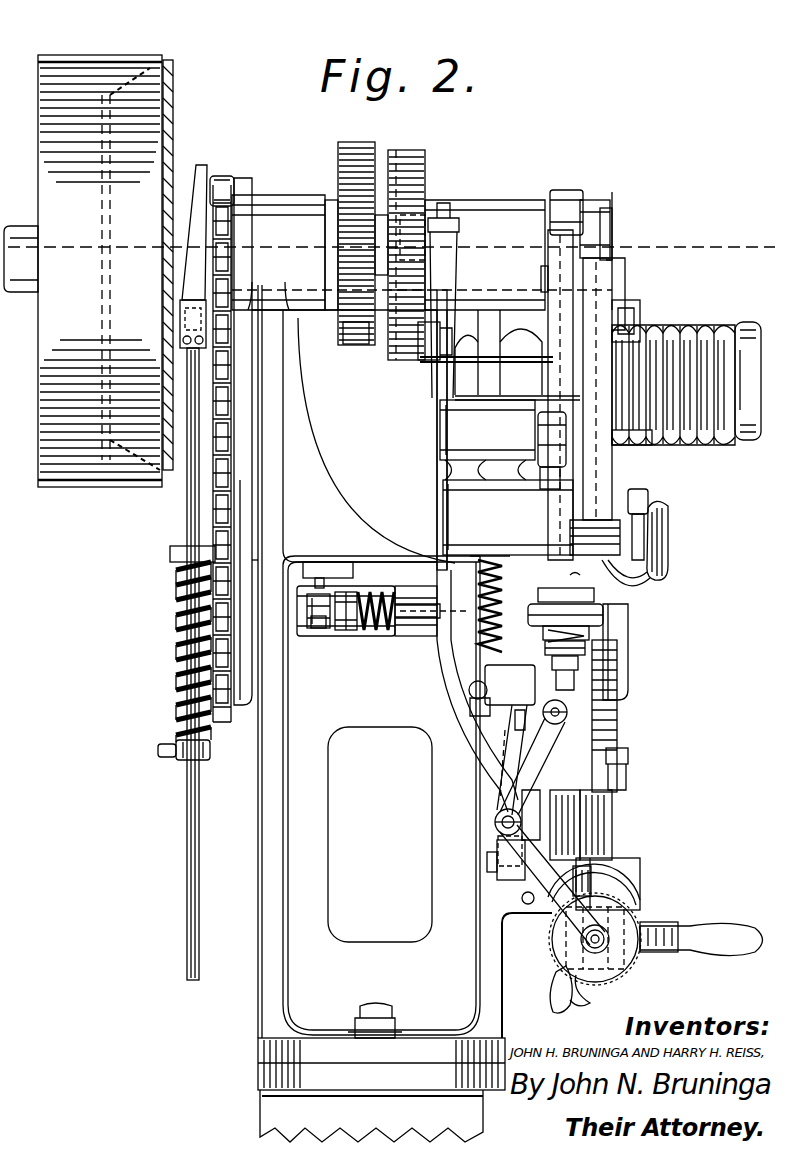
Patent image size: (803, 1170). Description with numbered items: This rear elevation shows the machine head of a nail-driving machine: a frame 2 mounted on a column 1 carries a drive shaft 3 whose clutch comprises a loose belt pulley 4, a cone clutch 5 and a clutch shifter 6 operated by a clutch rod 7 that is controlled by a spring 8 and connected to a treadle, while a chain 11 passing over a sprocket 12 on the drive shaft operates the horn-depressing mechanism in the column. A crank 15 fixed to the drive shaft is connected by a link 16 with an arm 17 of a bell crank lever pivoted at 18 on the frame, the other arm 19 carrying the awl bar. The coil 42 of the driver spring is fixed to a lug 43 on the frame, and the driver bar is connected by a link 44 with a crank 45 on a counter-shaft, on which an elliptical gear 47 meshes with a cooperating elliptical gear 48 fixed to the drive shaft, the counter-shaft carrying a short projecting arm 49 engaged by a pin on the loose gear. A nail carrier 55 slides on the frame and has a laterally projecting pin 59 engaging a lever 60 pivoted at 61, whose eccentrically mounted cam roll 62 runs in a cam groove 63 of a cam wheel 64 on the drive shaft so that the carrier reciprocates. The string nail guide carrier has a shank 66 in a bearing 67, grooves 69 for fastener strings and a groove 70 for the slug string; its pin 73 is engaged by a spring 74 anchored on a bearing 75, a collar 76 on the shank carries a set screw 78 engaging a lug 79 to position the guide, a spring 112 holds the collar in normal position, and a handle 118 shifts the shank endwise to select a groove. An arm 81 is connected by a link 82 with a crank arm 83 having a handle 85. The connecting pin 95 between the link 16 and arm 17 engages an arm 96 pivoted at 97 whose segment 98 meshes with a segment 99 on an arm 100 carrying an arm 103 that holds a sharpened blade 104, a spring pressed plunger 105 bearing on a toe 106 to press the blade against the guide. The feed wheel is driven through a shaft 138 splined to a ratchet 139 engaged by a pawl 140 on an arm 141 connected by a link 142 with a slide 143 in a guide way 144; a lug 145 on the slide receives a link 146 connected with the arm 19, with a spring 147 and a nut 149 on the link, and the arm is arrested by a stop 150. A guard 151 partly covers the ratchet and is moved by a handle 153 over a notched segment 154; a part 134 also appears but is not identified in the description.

The column 1 is at (260, 1116).
The frame 2 is at (262, 812).
The drive shaft 3 is at (84, 247).
The loose belt pulley 4 is at (86, 55).
The cone clutch 5 is at (170, 70).
The clutch shifter 6 is at (200, 210).
The clutch rod 7 is at (188, 866).
The spring 8 is at (177, 622).
The chain 11 is at (214, 488).
The sprocket 12 is at (220, 178).
The crank 15 is at (612, 235).
The link 16 is at (640, 318).
The arm 17 is at (626, 445).
The pivot 18 is at (648, 505).
The arm 19 is at (670, 548).
The coil 42 is at (696, 450).
The lug 43 is at (742, 323).
The link 44 is at (600, 204).
The crank 45 is at (566, 190).
The elliptical gear 47 is at (354, 345).
The elliptical gear 48 is at (368, 142).
The short projecting arm 49 is at (330, 200).
The nail carrier 55 is at (616, 850).
The laterally projecting pin 59 is at (495, 865).
The lever 60 is at (435, 504).
The pivot 61 is at (418, 345).
The cam roll 62 is at (413, 217).
The cam groove 63 is at (405, 170).
The cam wheel 64 is at (422, 160).
The shank 66 is at (347, 588).
The bearing 67 is at (392, 632).
The grooves 69 is at (582, 822).
The groove 70 is at (606, 826).
The laterally projecting pin 73 is at (470, 682).
The spring 74 is at (440, 640).
The bearing 75 is at (470, 570).
The collar 76 is at (320, 632).
The set screw 78 is at (321, 585).
The laterally projecting lug 79 is at (322, 562).
The arm 81 is at (470, 600).
The link 82 is at (487, 558).
The crank arm 83 is at (512, 740).
The handle 85 is at (505, 776).
The connecting pin 95 is at (545, 277).
The arm 96 is at (550, 235).
The pivot 97 is at (556, 792).
The segment 98 is at (548, 412).
The segment 99 is at (550, 480).
The arm 100 is at (578, 557).
The arm 103 is at (617, 722).
The sharpened blade 104 is at (628, 758).
The spring pressed plunger 105 is at (565, 592).
The toe 106 is at (603, 616).
The spring 112 is at (347, 636).
The handle 118 is at (334, 640).
The lug 134 is at (556, 984).
The shaft 138 is at (615, 965).
The ratchet 139 is at (578, 988).
The pawl 140 is at (560, 918).
The arm 141 is at (498, 846).
The link 142 is at (494, 821).
The slide 143 is at (540, 728).
The guide way 144 is at (543, 708).
The laterally projecting lug 145 is at (587, 648).
The link 146 is at (628, 692).
The spring 147 is at (590, 632).
The nut 149 is at (580, 662).
The stop 150 is at (521, 899).
The guard 151 is at (620, 880).
The handle 153 is at (700, 927).
The notched segment 154 is at (642, 905).